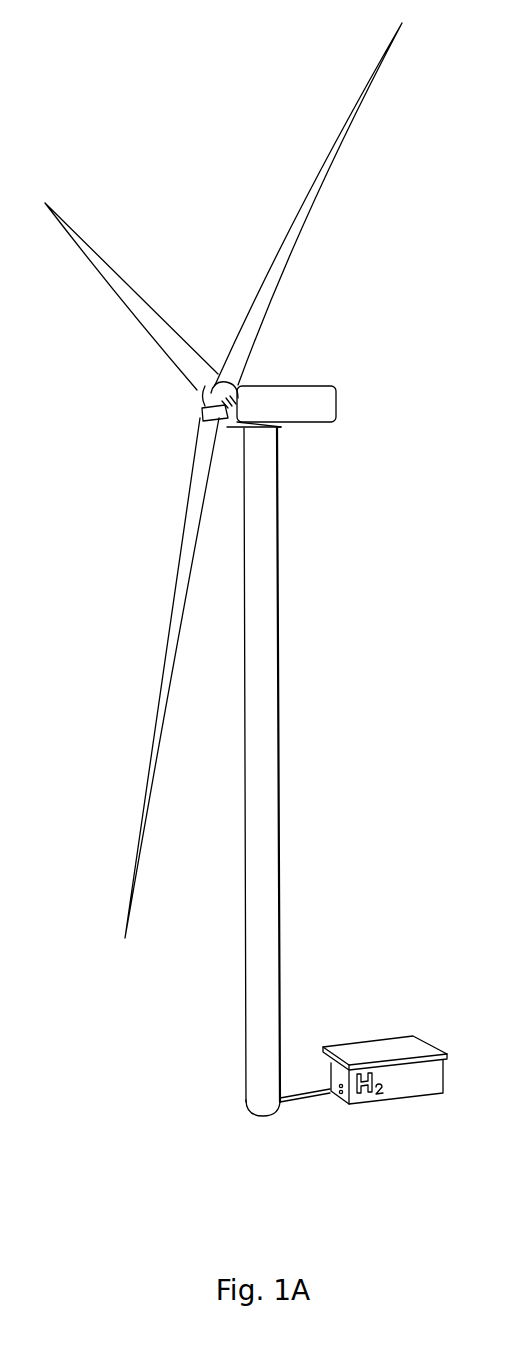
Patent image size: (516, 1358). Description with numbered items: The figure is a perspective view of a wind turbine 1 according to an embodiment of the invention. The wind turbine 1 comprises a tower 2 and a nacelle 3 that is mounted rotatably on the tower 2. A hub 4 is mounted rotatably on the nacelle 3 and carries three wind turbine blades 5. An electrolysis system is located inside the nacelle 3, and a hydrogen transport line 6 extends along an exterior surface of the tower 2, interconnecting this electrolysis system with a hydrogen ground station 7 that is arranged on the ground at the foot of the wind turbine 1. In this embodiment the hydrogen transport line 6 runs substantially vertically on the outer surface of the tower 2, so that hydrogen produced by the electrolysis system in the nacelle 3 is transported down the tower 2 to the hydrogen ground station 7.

The wind turbine 1 is at (343, 498).
The tower 2 is at (262, 880).
The nacelle 3 is at (302, 395).
The hub 4 is at (205, 402).
The wind turbine blades 5 is at (358, 102).
The hydrogen transport line 6 is at (278, 791).
The hydrogen ground station 7 is at (393, 1048).